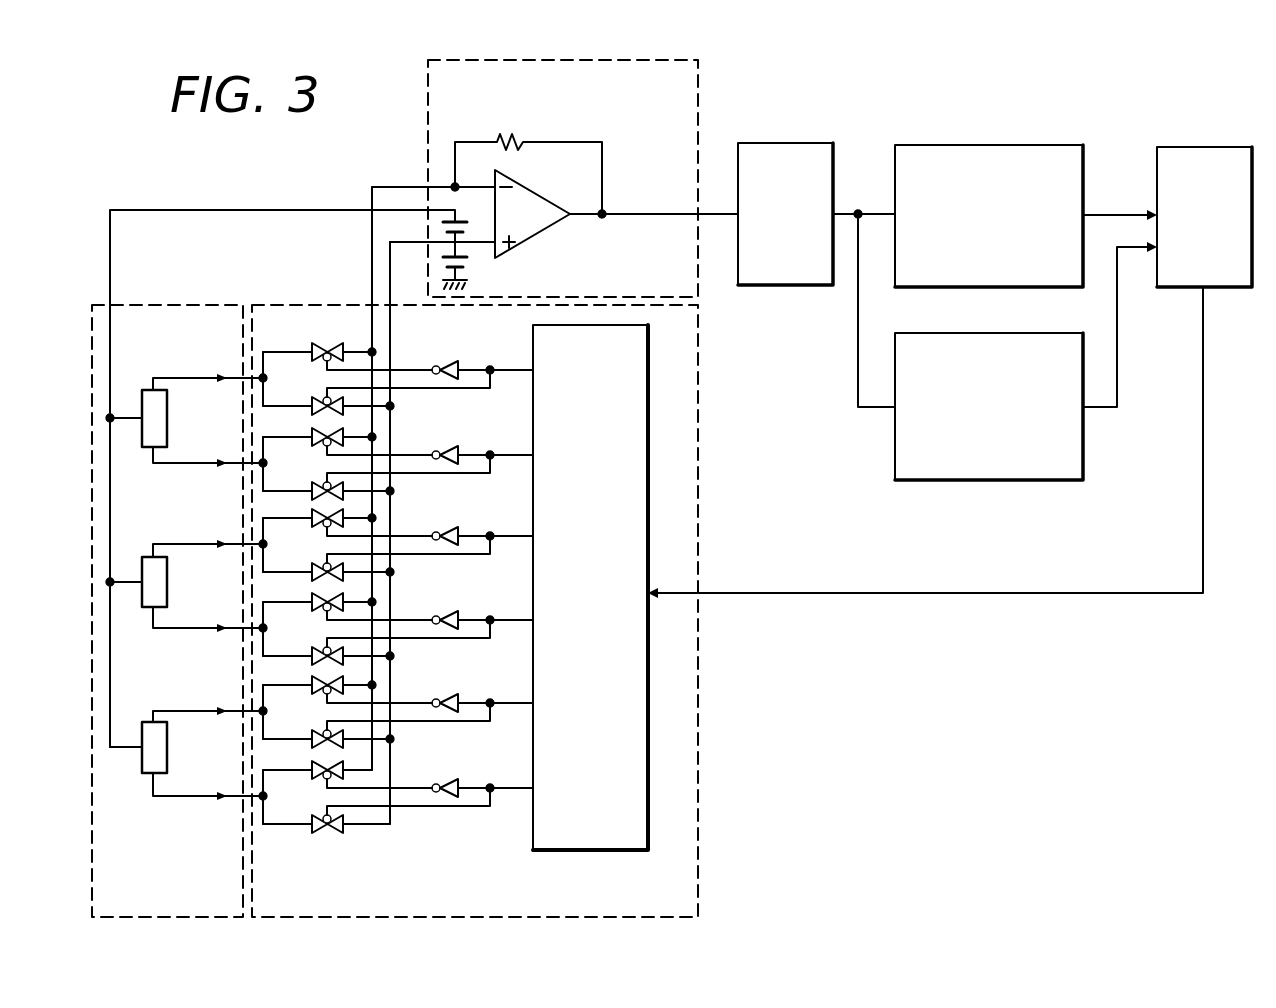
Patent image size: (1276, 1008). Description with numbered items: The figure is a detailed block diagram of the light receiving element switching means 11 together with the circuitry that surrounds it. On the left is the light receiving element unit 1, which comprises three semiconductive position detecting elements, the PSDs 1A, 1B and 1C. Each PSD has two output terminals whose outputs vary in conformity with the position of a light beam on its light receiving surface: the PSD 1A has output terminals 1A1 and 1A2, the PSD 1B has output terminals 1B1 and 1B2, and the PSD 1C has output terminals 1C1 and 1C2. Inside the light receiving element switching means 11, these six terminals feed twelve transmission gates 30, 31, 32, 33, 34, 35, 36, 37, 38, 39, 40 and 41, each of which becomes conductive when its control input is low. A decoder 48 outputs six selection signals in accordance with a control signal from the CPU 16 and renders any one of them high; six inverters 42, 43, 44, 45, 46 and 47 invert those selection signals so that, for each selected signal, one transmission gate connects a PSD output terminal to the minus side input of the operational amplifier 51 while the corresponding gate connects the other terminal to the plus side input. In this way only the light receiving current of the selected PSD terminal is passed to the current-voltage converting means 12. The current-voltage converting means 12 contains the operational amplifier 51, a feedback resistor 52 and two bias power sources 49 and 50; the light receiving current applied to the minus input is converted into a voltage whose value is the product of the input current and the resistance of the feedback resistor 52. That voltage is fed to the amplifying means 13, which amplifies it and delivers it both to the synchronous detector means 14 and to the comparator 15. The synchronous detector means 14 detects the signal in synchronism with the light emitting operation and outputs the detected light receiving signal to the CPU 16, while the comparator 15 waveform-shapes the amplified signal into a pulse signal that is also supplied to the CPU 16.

The light receiving element unit 1 is at (170, 305).
The light receiving element switching means 11 is at (272, 305).
The current-voltage converting means 12 is at (703, 109).
The amplifying means 13 is at (815, 142).
The synchronous detector means 14 is at (1050, 144).
The comparator 15 is at (1052, 481).
The CPU 16 is at (1221, 146).
The PSD 1A is at (146, 448).
The PSD 1B is at (146, 608).
The PSD 1C is at (146, 774).
The output terminal 1A1 is at (163, 385).
The output terminal 1A2 is at (158, 455).
The output terminal 1B1 is at (163, 551).
The output terminal 1B2 is at (158, 620).
The output terminal 1C1 is at (163, 716).
The output terminal 1C2 is at (158, 788).
The transmission gate 30 is at (322, 344).
The transmission gate 31 is at (322, 398).
The transmission gate 32 is at (322, 429).
The transmission gate 33 is at (322, 483).
The transmission gate 34 is at (322, 510).
The transmission gate 35 is at (322, 564).
The transmission gate 36 is at (322, 594).
The transmission gate 37 is at (322, 648).
The transmission gate 38 is at (322, 677).
The transmission gate 39 is at (322, 731).
The transmission gate 40 is at (322, 762).
The transmission gate 41 is at (322, 816).
The inverter 42 is at (436, 365).
The inverter 43 is at (436, 450).
The inverter 44 is at (436, 531).
The inverter 45 is at (436, 615).
The inverter 46 is at (436, 698).
The inverter 47 is at (436, 783).
The decoder 48 is at (649, 410).
The bias power source 49 is at (468, 265).
The bias power source 50 is at (443, 230).
The operational amplifier 51 is at (546, 232).
The feedback resistor 52 is at (512, 148).